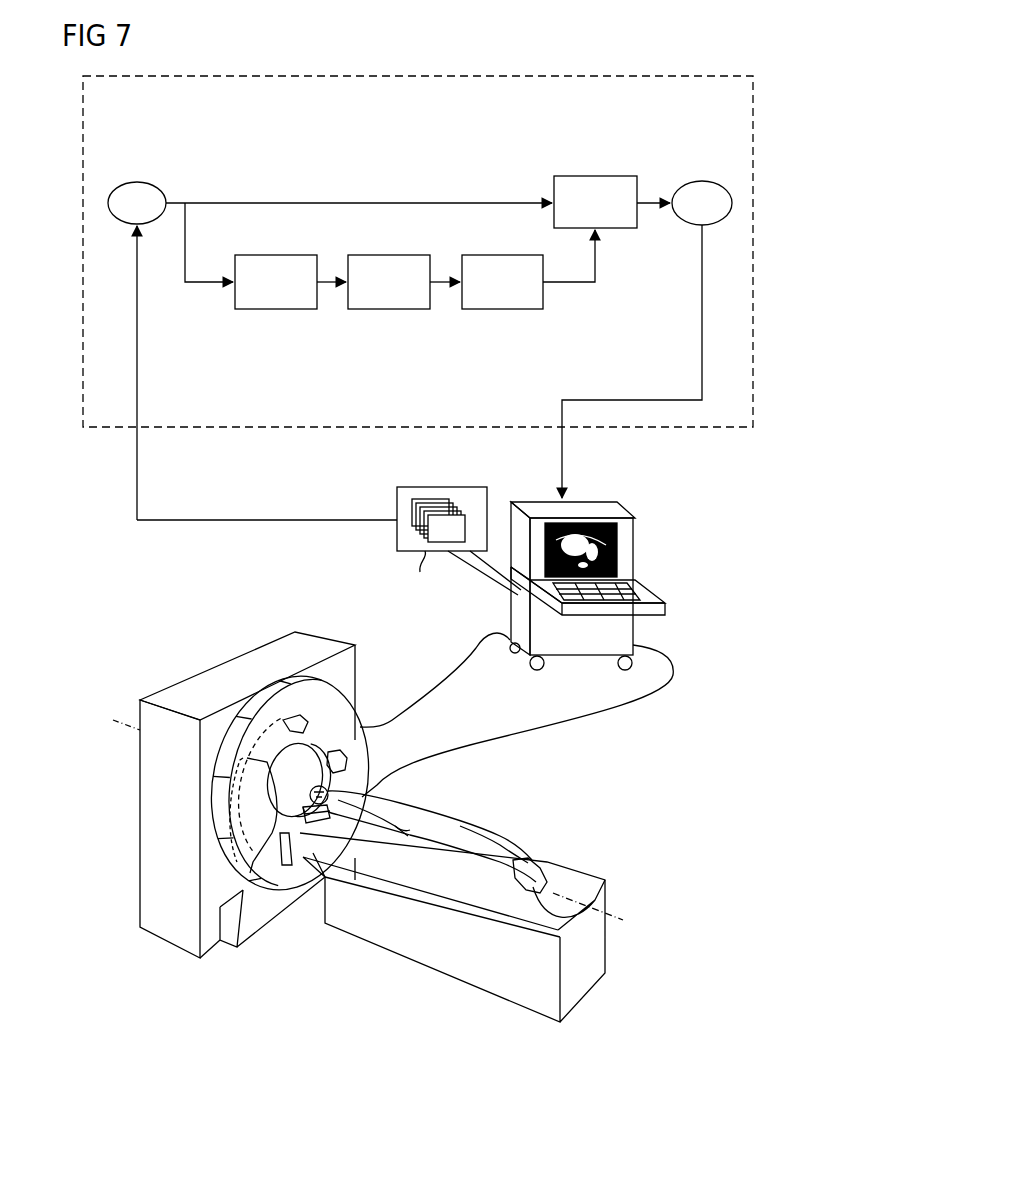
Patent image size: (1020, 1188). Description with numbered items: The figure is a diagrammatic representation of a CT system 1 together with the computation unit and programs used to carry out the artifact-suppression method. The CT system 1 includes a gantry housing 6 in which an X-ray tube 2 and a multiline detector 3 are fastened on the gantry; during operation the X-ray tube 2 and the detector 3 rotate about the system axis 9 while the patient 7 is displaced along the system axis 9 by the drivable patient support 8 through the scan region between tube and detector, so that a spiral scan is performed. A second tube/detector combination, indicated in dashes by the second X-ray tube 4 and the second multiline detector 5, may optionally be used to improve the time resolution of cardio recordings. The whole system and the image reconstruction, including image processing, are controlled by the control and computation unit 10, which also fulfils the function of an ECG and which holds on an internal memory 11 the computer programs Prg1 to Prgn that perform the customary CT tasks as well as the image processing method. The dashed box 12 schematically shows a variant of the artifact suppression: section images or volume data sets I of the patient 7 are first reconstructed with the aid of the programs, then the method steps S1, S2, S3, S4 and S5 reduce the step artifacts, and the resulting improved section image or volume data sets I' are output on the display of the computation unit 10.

The CT system 1 is at (186, 980).
The first X-ray tube 2 is at (310, 719).
The first detector 3 is at (290, 866).
The second X-ray tube 4 is at (347, 758).
The second detector 5 is at (260, 862).
The gantry housing 6 is at (145, 888).
The patient 7 is at (408, 802).
The patient support 8 is at (475, 968).
The forward increment direction/system axis 9 is at (610, 908).
The control and computation unit 10 is at (634, 562).
The memory 11 is at (397, 496).
The dashed box 12 is at (339, 76).
The method step S1 is at (137, 182).
The method step S2 is at (272, 309).
The method step S3 is at (392, 309).
The method step S4 is at (498, 309).
The method step S5 is at (592, 176).